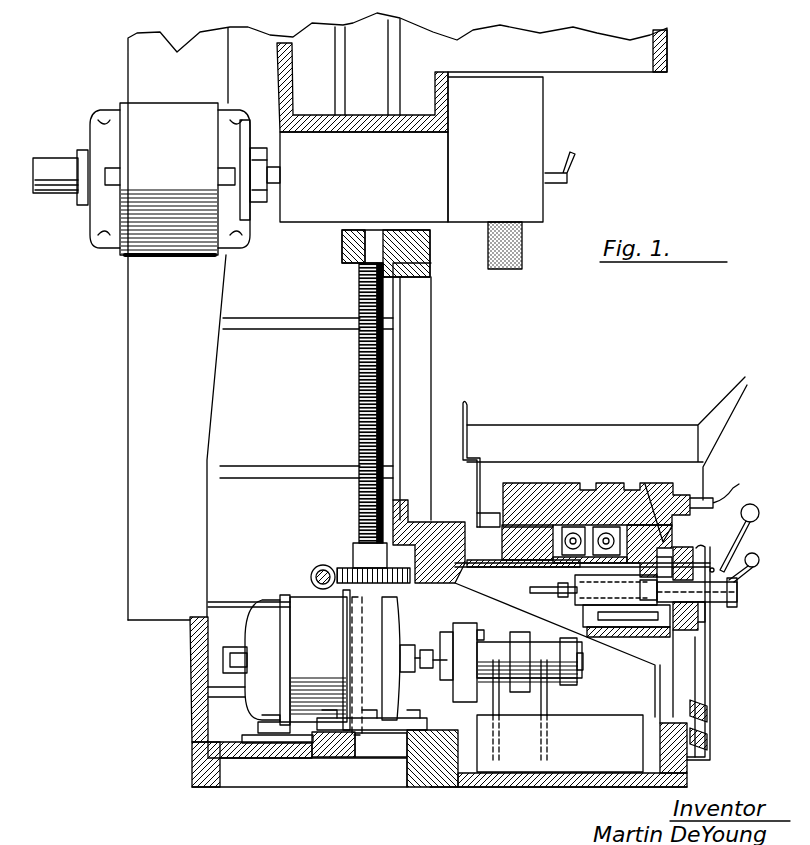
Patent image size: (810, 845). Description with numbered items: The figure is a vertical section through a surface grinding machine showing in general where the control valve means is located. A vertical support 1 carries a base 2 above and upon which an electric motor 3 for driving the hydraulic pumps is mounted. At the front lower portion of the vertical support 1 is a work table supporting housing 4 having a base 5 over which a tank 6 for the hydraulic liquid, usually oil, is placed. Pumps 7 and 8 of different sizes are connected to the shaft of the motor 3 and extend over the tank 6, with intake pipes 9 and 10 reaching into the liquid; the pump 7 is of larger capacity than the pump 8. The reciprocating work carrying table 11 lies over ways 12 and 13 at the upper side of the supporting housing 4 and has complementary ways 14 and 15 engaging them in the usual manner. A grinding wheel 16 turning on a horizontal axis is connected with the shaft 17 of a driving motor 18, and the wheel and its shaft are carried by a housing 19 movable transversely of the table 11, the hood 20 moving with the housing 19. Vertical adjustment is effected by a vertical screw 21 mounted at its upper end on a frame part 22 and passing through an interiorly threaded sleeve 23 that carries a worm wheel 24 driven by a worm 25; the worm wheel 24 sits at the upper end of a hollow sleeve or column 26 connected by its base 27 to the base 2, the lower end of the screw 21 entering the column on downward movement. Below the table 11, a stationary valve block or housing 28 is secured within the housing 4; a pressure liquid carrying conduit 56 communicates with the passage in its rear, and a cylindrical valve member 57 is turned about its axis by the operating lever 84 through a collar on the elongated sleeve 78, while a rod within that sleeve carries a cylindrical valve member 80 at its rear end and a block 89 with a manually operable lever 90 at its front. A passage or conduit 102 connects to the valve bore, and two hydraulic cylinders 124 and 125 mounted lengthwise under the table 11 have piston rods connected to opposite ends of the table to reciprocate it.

The vertical support 1 is at (190, 670).
The base 2 is at (300, 760).
The electric motor 3 is at (300, 615).
The work table supporting housing 4 is at (440, 545).
The base 5 is at (540, 788).
The tank 6 is at (595, 735).
The pump 7 is at (487, 650).
The pump 8 is at (555, 682).
The intake pipe 9 is at (498, 702).
The intake pipe 10 is at (548, 702).
The reciprocating work carrying table 11 is at (566, 525).
The way 12 is at (520, 548).
The way 13 is at (672, 543).
The complementary way 14 is at (520, 515).
The complementary way 15 is at (652, 540).
The grinding wheel 16 is at (525, 248).
The shaft 17 is at (280, 185).
The driving motor 18 is at (160, 255).
The housing 19 is at (360, 155).
The hood 20 is at (545, 130).
The vertical screw 21 is at (365, 388).
The frame part 22 is at (390, 240).
The interiorly threaded sleeve 23 is at (345, 565).
The worm wheel 24 is at (400, 585).
The worm 25 is at (310, 570).
The hollow sleeve or column 26 is at (375, 640).
The base 27 is at (382, 760).
The valve block or housing 28 is at (673, 640).
The pressure liquid carrying pipe or conduit 56 is at (536, 595).
The cylindrical valve member 57 is at (625, 600).
The elongated sleeve 78 is at (718, 603).
The cylindrical valve member 80 is at (705, 622).
The operating lever 84 is at (738, 544).
The block 89 is at (740, 598).
The manually operable lever 90 is at (760, 567).
The passage or conduit 102 is at (612, 624).
The hydraulic cylinder 124 is at (576, 528).
The hydraulic cylinder 125 is at (606, 532).